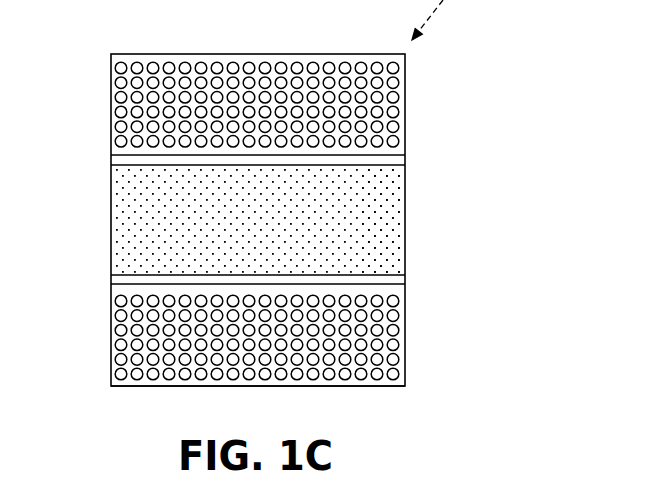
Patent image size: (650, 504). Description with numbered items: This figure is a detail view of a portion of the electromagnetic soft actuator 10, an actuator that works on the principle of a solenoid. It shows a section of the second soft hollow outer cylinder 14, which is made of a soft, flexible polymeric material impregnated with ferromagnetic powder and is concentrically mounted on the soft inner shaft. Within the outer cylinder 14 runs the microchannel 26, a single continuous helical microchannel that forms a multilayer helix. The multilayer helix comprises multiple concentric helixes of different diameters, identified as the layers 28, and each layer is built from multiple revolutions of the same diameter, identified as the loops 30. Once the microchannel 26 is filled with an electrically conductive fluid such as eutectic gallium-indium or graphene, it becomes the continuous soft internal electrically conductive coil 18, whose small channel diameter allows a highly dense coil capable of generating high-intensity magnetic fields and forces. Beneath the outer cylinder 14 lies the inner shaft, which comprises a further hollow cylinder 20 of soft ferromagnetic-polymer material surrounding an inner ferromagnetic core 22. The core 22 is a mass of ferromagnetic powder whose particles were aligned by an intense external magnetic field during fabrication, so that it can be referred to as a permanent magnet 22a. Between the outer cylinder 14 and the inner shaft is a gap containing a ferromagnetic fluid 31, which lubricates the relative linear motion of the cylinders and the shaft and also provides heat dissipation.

The electromagnetic soft actuator 10 is at (458, 88).
The second soft hollow outer cylinder 14 is at (415, 343).
The continuous soft internal electrically conductive coil 18 is at (112, 367).
The hollow cylinder 20 is at (405, 280).
The inner ferromagnetic core 22 is at (269, 230).
The permanent magnet 22a is at (393, 203).
The microchannel 26 is at (295, 66).
The layers 28 is at (106, 139).
The loops 30 is at (216, 51).
The ferromagnetic fluid 31 is at (110, 160).